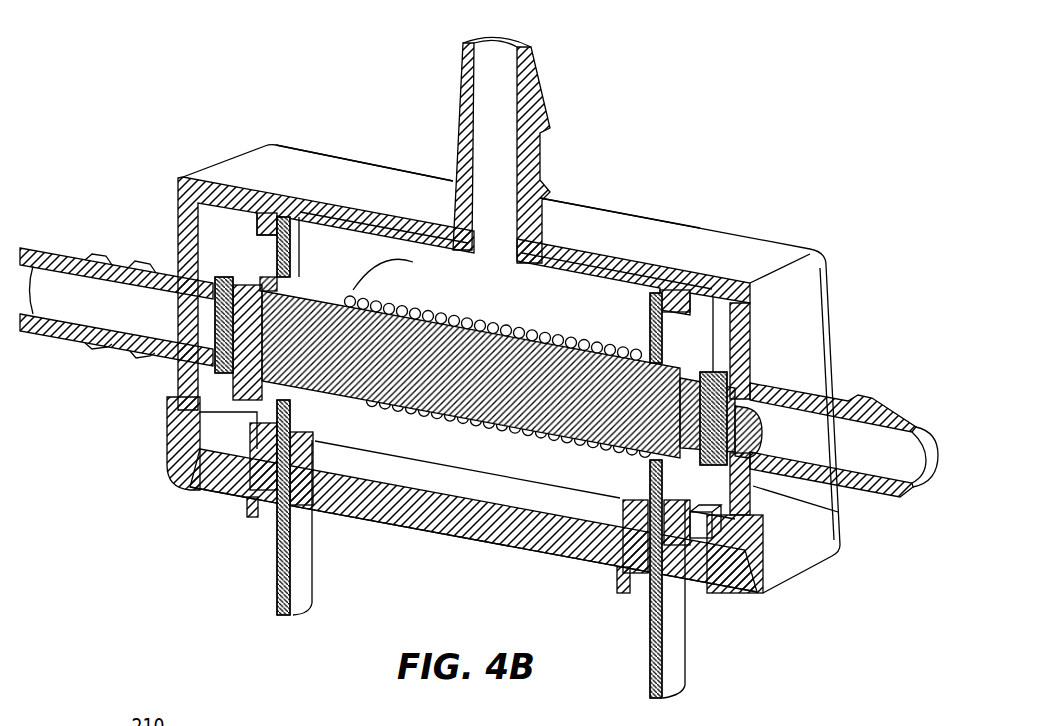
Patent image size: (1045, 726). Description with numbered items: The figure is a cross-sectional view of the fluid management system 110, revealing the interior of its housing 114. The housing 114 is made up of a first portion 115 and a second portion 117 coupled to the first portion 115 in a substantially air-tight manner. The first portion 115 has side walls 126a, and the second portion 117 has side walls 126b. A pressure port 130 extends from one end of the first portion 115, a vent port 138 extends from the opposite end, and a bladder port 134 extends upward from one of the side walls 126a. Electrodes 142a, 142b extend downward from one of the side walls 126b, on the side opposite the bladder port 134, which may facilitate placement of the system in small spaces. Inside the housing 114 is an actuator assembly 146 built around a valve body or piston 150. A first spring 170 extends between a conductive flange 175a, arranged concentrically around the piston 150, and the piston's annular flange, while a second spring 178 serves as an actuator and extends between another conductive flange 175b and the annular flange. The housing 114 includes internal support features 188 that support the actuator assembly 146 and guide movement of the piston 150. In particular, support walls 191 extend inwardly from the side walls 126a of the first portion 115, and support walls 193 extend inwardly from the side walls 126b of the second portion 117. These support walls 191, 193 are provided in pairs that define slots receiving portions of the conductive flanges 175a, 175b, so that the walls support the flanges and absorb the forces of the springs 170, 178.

The fluid management system 110 is at (135, 100).
The housing 114 is at (375, 72).
The first portion 115 is at (345, 140).
The second portion 117 is at (490, 555).
The side walls 126a is at (650, 235).
The side walls 126b is at (567, 550).
The pressure port 130 is at (78, 248).
The bladder port 134 is at (453, 93).
The vent port 138 is at (866, 393).
The electrode 142a is at (670, 672).
The electrode 142b is at (277, 588).
The actuator assembly 146 is at (437, 272).
The piston 150 is at (480, 395).
The first spring 170 is at (557, 327).
The conductive flange 175a is at (683, 343).
The conductive flange 175b is at (268, 262).
The second spring 178 is at (253, 517).
The internal support features 188 is at (218, 428).
The support walls 191 is at (262, 215).
The support walls 193 is at (200, 480).